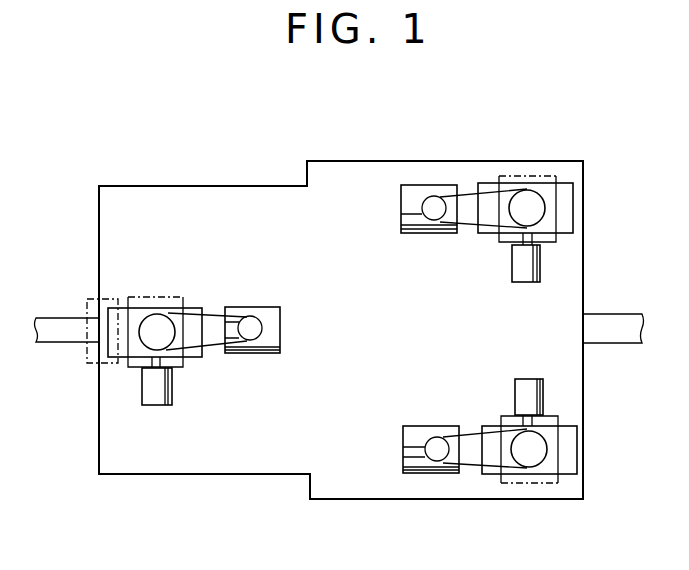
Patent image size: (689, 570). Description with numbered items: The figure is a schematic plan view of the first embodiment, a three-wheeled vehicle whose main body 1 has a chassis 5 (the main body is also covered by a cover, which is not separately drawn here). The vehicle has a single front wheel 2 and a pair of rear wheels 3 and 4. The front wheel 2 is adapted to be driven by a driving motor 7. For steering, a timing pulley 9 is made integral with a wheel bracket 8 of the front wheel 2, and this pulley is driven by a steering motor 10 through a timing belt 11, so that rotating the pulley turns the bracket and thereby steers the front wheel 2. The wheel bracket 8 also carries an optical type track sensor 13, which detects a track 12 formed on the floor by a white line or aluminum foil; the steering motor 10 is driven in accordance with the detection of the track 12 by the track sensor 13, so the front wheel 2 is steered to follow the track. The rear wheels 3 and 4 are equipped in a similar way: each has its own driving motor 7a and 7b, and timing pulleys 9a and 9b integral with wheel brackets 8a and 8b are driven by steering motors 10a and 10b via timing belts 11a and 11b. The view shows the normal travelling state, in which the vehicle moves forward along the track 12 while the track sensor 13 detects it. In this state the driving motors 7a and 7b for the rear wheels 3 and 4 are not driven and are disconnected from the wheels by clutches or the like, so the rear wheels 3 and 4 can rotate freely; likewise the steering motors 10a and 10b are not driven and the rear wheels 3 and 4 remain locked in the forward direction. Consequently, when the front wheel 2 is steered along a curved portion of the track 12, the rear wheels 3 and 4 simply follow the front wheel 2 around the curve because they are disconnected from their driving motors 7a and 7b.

The main body 1 is at (303, 173).
The front wheel 2 is at (195, 305).
The rear wheel 3 is at (570, 190).
The rear wheel 4 is at (570, 452).
The chassis 5 is at (184, 185).
The driving motor 7 is at (152, 400).
The driving motor 7a is at (533, 262).
The driving motor 7b is at (540, 396).
The wheel bracket 8 is at (137, 298).
The wheel bracket 8a is at (540, 176).
The wheel bracket 8b is at (550, 482).
The timing pulley 9 is at (155, 318).
The timing pulley 9a is at (540, 208).
The timing pulley 9b is at (527, 462).
The steering motor 10 is at (267, 310).
The steering motor 10a is at (408, 190).
The steering motor 10b is at (415, 470).
The timing belt 11 is at (212, 313).
The timing belt 11a is at (467, 195).
The timing belt 11b is at (470, 465).
The track 12 is at (52, 325).
The track sensor 13 is at (92, 340).